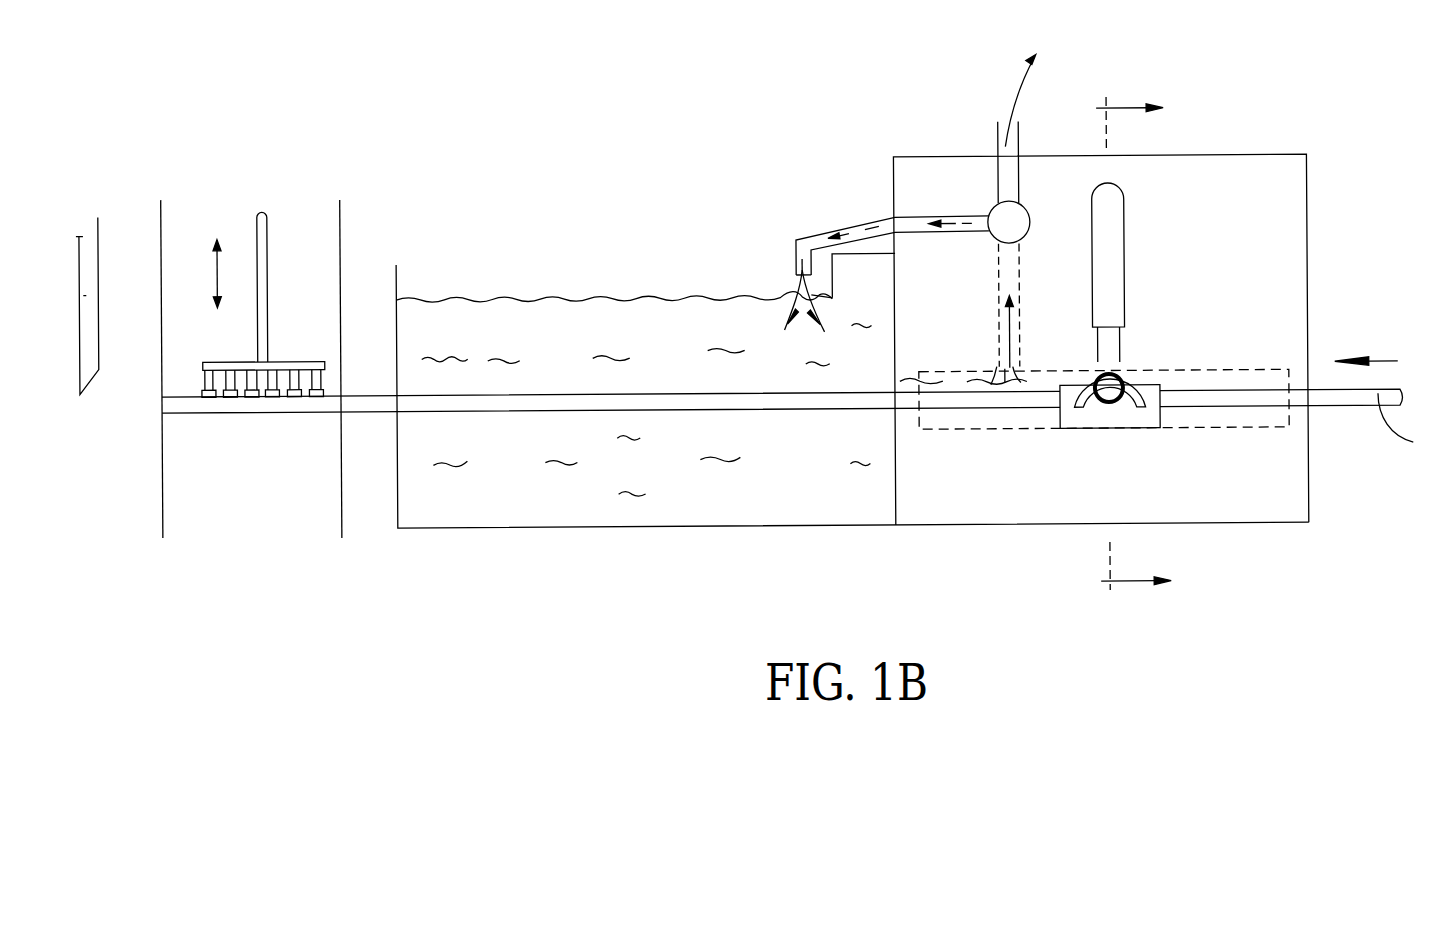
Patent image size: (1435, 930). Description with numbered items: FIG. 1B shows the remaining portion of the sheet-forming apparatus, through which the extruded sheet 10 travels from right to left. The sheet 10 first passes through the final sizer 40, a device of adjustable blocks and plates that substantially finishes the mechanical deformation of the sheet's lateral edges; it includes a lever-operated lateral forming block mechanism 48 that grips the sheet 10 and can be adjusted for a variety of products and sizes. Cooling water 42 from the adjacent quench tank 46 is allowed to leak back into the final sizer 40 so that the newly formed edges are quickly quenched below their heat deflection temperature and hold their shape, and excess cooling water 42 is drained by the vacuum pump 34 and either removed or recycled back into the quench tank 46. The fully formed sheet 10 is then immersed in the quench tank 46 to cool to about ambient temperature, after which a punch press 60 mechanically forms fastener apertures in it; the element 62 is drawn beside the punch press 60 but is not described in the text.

The extruded sheet 10 is at (262, 404).
The vacuum pump 34 is at (994, 208).
The final sizer 40 is at (1308, 486).
The cooling water 42 is at (797, 503).
The quench tank 46 is at (745, 526).
The lateral forming block mechanism 48 is at (1115, 420).
The punch press 60 is at (268, 304).
The plate 62 is at (92, 295).